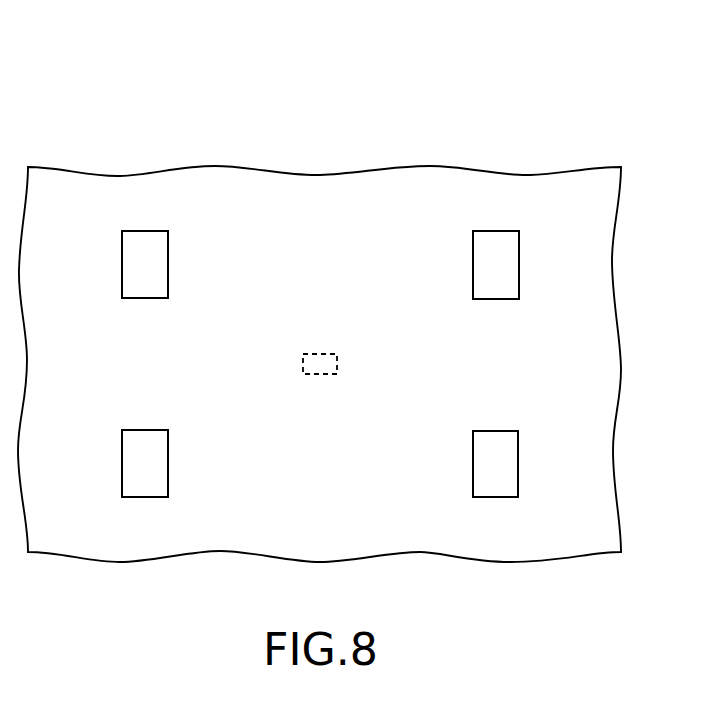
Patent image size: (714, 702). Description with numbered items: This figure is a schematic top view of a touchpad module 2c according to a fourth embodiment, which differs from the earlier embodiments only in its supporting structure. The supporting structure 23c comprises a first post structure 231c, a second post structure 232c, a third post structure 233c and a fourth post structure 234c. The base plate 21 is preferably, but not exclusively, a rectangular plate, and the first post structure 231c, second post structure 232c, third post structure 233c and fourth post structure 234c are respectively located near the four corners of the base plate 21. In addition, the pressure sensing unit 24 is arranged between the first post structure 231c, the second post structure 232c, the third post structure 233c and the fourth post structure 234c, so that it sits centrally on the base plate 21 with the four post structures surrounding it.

The base plate 21 is at (428, 180).
The touchpad module 2c is at (587, 107).
The supporting structure 23c is at (104, 33).
The first post structure 231c is at (145, 243).
The second post structure 232c is at (495, 245).
The third post structure 233c is at (145, 442).
The fourth post structure 234c is at (497, 442).
The pressure sensing unit 24 is at (322, 362).